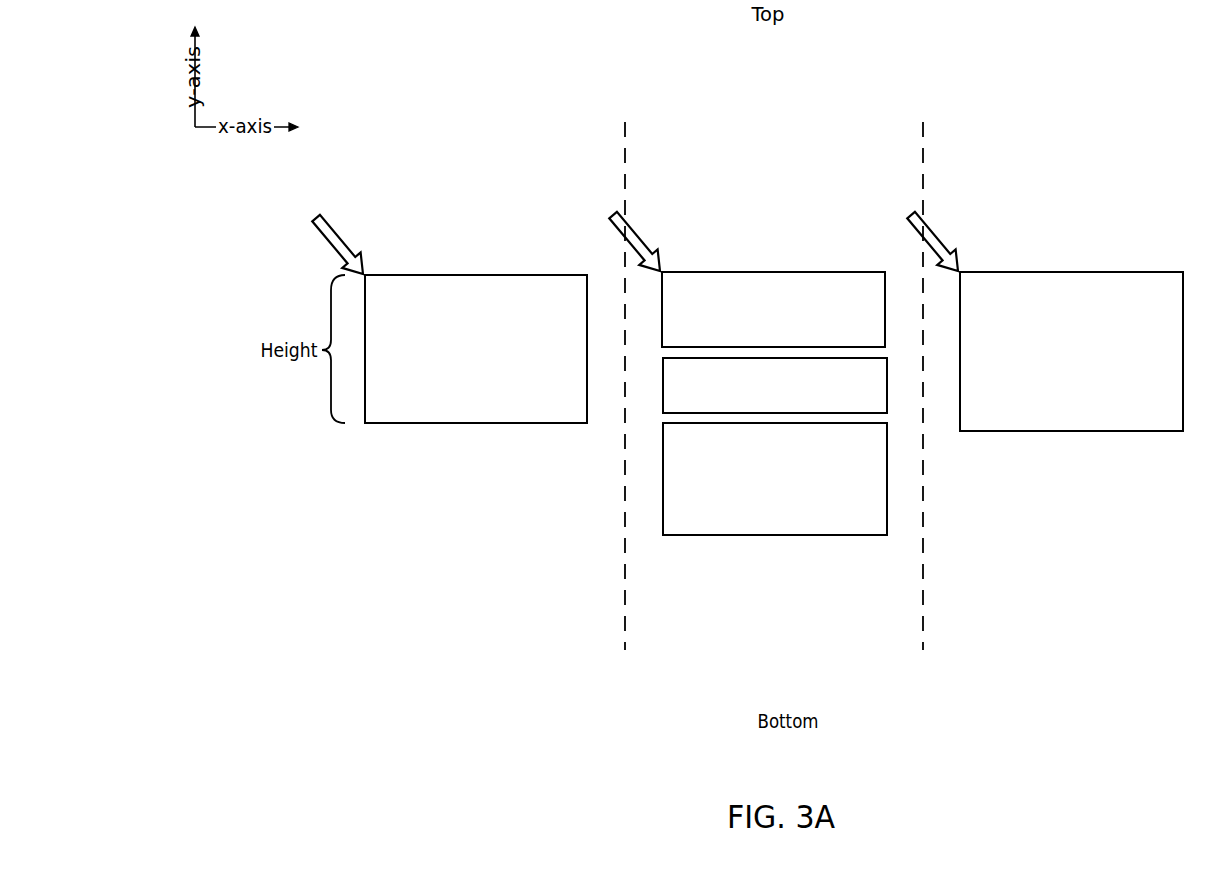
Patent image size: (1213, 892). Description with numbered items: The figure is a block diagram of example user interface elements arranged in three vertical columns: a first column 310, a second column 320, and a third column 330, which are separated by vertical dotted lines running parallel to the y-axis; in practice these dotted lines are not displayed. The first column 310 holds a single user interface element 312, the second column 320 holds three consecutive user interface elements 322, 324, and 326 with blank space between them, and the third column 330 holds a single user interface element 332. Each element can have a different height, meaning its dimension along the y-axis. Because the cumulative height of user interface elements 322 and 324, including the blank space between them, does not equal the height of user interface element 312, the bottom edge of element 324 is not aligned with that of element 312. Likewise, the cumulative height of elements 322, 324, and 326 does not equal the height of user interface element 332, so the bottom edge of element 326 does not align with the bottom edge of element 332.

The first column 310 is at (468, 126).
The user interface element 312 is at (482, 275).
The second column 320 is at (772, 126).
The user interface element 322 is at (780, 272).
The user interface element 324 is at (887, 382).
The user interface element 326 is at (887, 478).
The third column 330 is at (1054, 126).
The user interface element 332 is at (1075, 272).